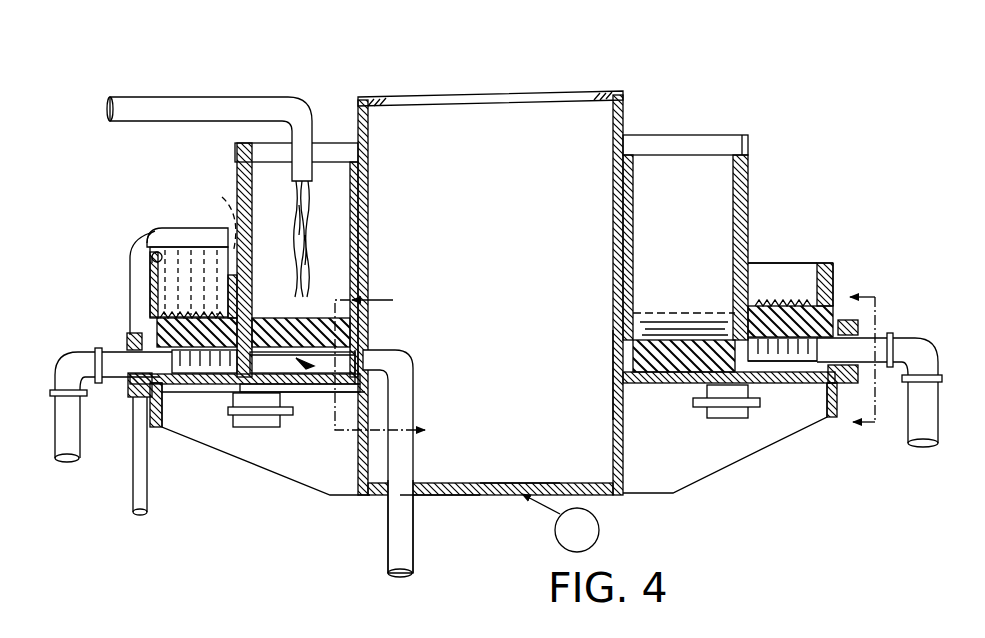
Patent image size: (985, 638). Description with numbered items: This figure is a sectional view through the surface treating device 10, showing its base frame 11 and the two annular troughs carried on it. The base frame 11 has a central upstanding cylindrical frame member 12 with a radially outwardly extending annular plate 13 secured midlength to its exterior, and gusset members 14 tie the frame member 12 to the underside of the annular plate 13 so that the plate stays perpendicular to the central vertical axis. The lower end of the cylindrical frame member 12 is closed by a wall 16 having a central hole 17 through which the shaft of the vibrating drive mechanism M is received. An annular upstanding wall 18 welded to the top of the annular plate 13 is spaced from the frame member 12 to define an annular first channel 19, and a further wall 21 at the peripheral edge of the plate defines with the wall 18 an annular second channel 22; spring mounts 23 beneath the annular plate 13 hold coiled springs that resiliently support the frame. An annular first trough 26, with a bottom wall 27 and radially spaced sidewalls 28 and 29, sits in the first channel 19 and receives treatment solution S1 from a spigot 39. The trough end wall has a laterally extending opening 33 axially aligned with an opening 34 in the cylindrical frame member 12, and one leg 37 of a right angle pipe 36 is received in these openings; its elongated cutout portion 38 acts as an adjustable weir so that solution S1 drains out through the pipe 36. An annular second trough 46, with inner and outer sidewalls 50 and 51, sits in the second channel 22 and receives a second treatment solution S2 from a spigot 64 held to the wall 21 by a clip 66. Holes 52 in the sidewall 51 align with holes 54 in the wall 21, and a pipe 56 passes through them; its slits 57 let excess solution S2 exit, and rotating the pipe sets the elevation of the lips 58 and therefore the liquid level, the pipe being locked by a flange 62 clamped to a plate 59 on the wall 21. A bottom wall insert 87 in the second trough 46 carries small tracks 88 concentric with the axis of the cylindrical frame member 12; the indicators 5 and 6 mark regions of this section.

The spray section 5 is at (392, 368).
The drain section 6 is at (879, 359).
The surface treating device 10 is at (603, 73).
The base frame 11 is at (722, 470).
The cylindrical frame member 12 is at (620, 386).
The annular plate 13 is at (812, 385).
The gusset members 14 is at (280, 464).
The wall 16 is at (446, 497).
The central hole 17 is at (506, 495).
The annular upstanding wall 18 is at (750, 150).
The annular first channel 19 is at (668, 170).
The wall 21 is at (833, 268).
The annular second channel 22 is at (780, 282).
The spring mounts 23 is at (232, 432).
The annular first trough 26 is at (700, 180).
The bottom wall 27 is at (673, 372).
The sidewall 28 is at (334, 168).
The sidewall 29 is at (250, 170).
The laterally extending opening 33 is at (358, 345).
The opening 34 is at (402, 366).
The right angle pipe 36 is at (395, 573).
The leg 37 is at (345, 390).
The elongated cutout portion 38 is at (303, 395).
The spigot 39 is at (222, 105).
The annular second trough 46 is at (798, 268).
The sidewall 50 is at (232, 288).
The sidewall 51 is at (150, 233).
The holes 52 is at (190, 384).
The holes 54 is at (122, 378).
The pipe 56 is at (220, 368).
The slits 57 is at (166, 364).
The lips 58 is at (213, 368).
The plate 59 is at (147, 392).
The flange 62 is at (75, 258).
The spigot 64 is at (163, 230).
The clip 66 is at (158, 252).
The bottom wall insert 87 is at (165, 325).
The small tracks 88 is at (195, 316).
The treatment solution S1 is at (697, 317).
The treatment solution S2 is at (215, 213).
The vibrating drive mechanism M is at (560, 523).